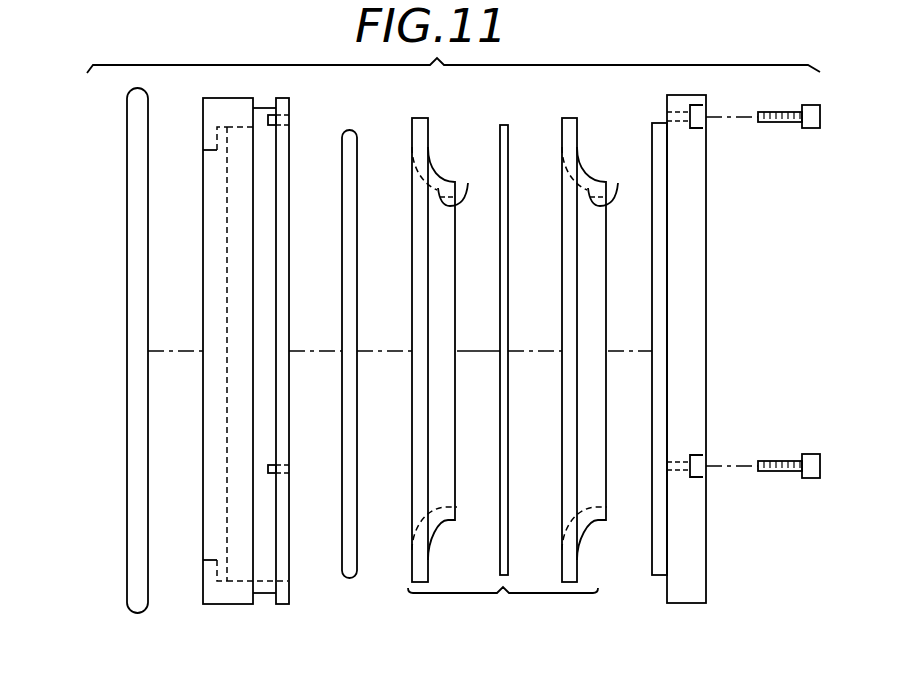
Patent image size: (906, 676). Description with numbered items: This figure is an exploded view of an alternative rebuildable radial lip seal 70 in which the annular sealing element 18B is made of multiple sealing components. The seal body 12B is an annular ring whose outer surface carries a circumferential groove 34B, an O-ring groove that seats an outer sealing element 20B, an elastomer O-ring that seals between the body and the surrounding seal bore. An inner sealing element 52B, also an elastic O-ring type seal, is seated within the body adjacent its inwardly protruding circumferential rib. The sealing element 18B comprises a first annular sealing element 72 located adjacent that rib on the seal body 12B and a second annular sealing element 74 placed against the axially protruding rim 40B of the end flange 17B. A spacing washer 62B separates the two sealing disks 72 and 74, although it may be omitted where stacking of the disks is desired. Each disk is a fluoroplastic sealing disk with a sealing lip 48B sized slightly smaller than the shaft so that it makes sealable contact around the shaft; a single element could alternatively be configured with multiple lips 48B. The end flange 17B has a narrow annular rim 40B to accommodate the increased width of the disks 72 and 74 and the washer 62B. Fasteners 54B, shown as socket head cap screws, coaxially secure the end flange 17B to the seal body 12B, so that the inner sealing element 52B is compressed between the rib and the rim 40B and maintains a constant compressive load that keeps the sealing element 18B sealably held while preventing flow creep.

The rebuildable seal 70 is at (437, 58).
The outer sealing element 20B is at (138, 614).
The seal body 12B is at (245, 605).
The circumferential groove 34B is at (263, 597).
The inner sealing element 52B is at (349, 578).
The annular sealing element 18B is at (502, 600).
The first annular sealing element 72 is at (428, 567).
The second annular sealing element 74 is at (577, 567).
The sealing lip 48B is at (468, 183).
The spacing washer 62B is at (505, 123).
The annular rim 40B is at (653, 576).
The end flange 17B is at (709, 553).
The fastener 54B is at (768, 122).